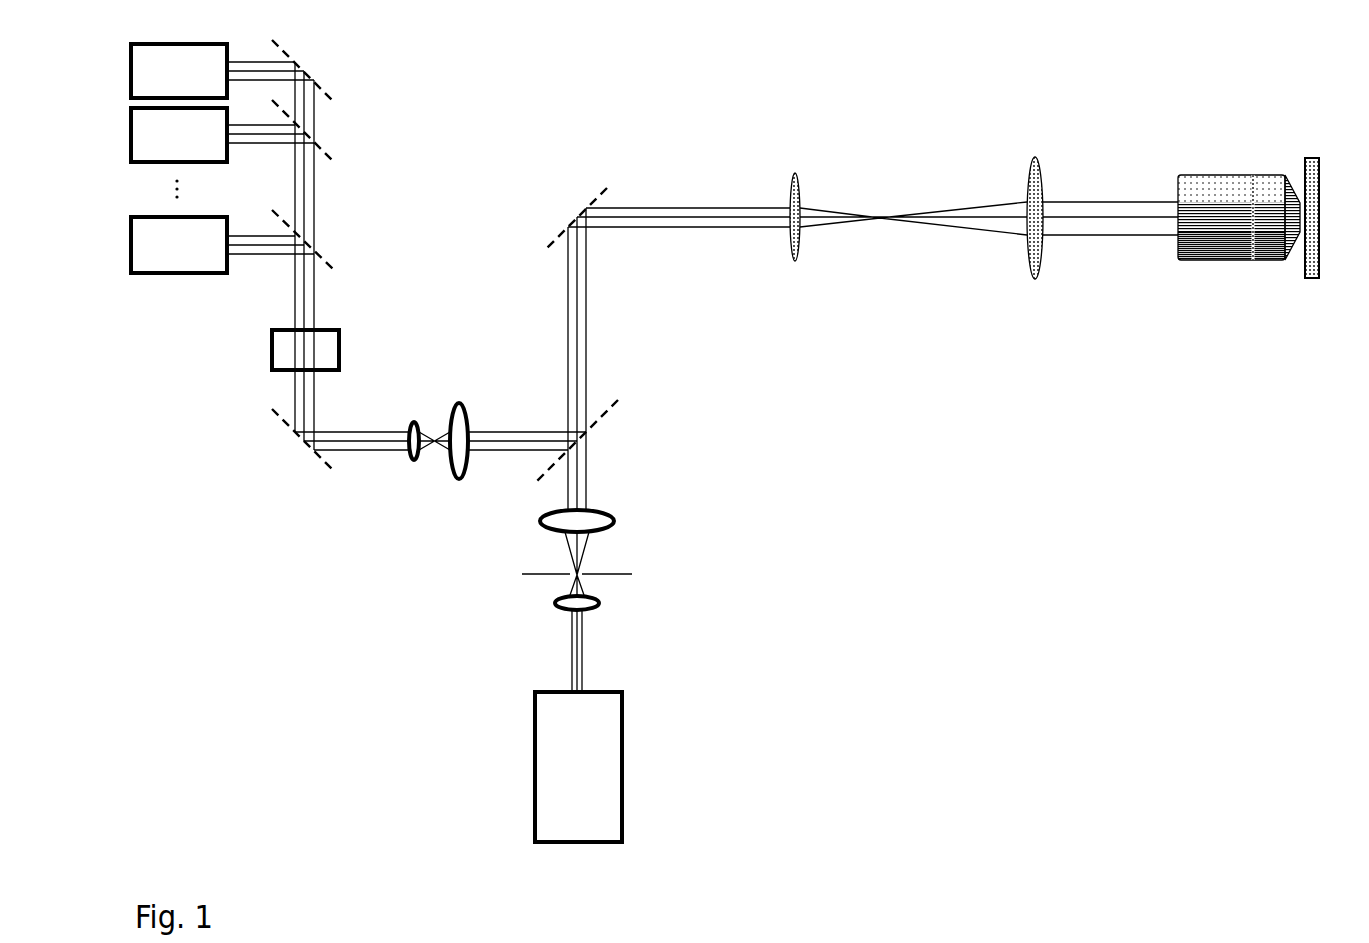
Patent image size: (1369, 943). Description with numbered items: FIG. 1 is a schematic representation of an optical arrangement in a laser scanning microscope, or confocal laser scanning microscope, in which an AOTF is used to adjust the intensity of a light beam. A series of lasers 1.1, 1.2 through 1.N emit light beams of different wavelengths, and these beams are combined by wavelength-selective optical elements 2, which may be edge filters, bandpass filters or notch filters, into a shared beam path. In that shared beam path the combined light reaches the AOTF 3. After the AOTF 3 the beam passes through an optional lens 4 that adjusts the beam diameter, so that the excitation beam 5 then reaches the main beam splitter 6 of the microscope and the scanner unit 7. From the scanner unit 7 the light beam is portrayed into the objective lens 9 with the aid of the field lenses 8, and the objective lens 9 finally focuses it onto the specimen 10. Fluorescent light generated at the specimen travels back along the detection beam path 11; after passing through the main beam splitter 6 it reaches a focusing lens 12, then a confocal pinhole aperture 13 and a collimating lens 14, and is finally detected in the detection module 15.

The laser 1.1 is at (222, 71).
The laser 1.2 is at (222, 135).
The laser 1.N is at (222, 245).
The wavelength-selective optical elements 2 is at (330, 245).
The AOTF 3 is at (305, 350).
The lens 4 is at (438, 427).
The excitation beam 5 is at (541, 445).
The main beam splitter 6 is at (588, 438).
The scanner unit 7 is at (571, 212).
The field lenses 8 is at (803, 185).
The objective lens 9 is at (1239, 217).
The specimen 10 is at (1324, 199).
The detection beam path 11 is at (575, 477).
The focusing lens 12 is at (598, 541).
The confocal pinhole aperture 13 is at (559, 577).
The collimating lens 14 is at (601, 598).
The detection module 15 is at (578, 767).